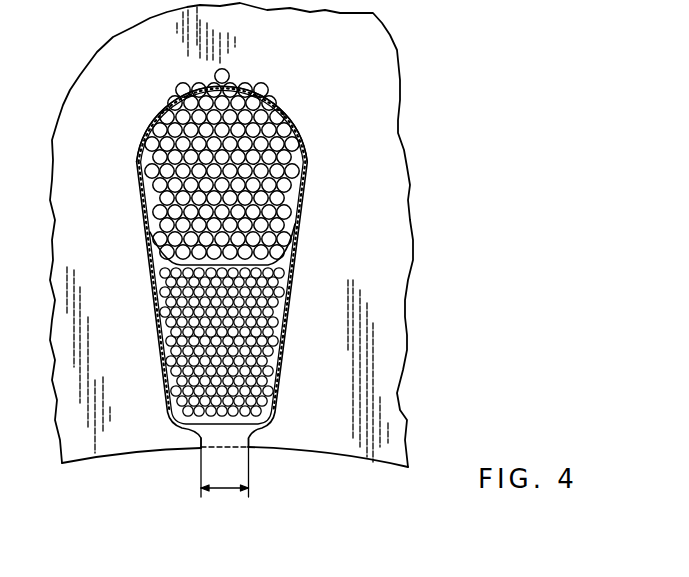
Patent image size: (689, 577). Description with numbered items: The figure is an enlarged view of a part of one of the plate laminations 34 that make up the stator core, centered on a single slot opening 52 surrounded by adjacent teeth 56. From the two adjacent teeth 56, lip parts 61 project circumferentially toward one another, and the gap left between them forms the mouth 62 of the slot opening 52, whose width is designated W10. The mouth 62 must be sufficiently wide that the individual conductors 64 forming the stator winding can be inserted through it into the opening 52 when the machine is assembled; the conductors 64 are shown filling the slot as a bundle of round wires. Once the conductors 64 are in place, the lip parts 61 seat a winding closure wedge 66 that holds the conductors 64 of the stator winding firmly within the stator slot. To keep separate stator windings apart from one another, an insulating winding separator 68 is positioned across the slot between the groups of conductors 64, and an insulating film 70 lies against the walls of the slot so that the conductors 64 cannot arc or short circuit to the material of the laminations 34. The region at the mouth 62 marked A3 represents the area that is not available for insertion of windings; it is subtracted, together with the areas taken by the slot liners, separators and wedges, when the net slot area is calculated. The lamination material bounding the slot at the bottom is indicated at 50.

The plate laminations 34 is at (120, 43).
The bottom wall 50 is at (345, 460).
The slot opening 52 is at (286, 327).
The teeth 56 is at (80, 258).
The lip parts 61 is at (193, 440).
The mouth 62 is at (242, 465).
The conductors 64 is at (263, 168).
The winding closure wedge 66 is at (230, 427).
The insulating winding separator 68 is at (294, 258).
The insulating film 70 is at (297, 107).
The area at the mouth A3 is at (240, 437).
The width of the mouth W10 is at (223, 490).